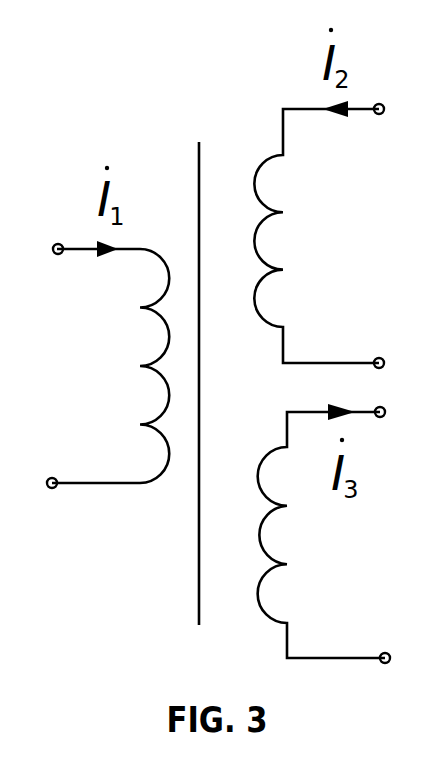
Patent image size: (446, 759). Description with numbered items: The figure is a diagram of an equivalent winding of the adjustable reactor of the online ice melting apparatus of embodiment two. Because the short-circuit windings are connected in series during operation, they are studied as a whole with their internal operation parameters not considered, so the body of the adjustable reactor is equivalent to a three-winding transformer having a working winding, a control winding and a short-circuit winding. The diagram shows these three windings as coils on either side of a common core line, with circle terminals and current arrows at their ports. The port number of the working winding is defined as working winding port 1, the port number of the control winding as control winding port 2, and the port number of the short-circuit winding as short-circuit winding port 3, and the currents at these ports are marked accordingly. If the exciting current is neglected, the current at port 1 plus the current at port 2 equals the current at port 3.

The working winding port 1 is at (108, 364).
The control winding port 2 is at (319, 234).
The short-circuit winding port 3 is at (324, 533).